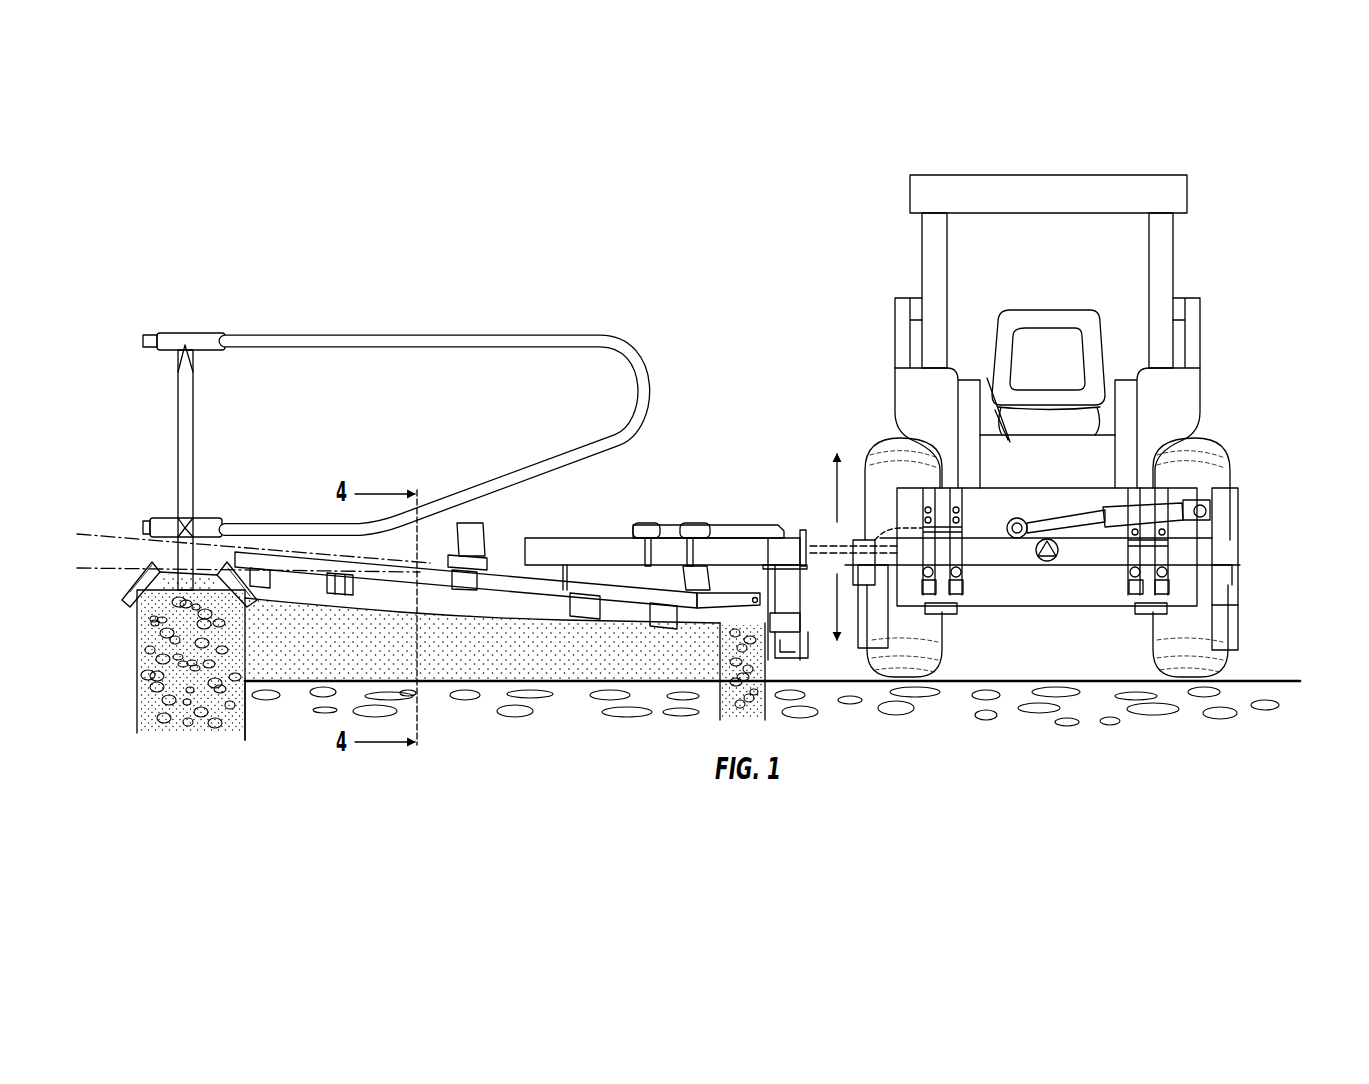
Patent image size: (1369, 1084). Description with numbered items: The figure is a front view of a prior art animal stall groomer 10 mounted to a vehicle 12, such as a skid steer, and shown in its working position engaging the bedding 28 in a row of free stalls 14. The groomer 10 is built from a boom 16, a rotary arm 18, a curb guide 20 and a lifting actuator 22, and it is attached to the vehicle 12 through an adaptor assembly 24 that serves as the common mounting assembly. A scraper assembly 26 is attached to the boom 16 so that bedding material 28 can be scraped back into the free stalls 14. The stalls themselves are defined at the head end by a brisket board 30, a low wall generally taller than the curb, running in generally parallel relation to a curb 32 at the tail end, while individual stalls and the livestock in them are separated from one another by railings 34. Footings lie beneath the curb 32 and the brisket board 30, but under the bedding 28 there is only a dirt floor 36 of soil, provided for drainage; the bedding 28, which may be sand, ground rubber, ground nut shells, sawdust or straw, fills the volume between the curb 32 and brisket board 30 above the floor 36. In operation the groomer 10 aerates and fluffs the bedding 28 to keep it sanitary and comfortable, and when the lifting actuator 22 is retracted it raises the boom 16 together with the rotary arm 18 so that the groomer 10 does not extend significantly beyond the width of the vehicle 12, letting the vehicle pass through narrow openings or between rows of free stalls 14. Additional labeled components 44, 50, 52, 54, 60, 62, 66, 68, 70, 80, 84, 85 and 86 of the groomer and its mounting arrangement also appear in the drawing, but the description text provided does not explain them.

The animal stall groomer 10 is at (1098, 426).
The vehicle 12 is at (1162, 244).
The free stalls 14 is at (292, 312).
The boom 16 is at (636, 536).
The rotary arm 18 is at (588, 538).
The curb guide 20 is at (790, 645).
The lifting actuator 22 is at (1108, 528).
The adaptor assembly 24 is at (972, 618).
The scraper assembly 26 is at (770, 520).
The bedding 28 is at (537, 650).
The brisket board 30 is at (198, 650).
The curb 32 is at (770, 660).
The railings 34 is at (619, 338).
The dirt floor 36 is at (587, 700).
The hydraulic valve 44 is at (1047, 562).
The vertical slide 50 is at (790, 598).
The post 52 is at (806, 550).
The flange 54 is at (783, 572).
The screed beam 60 is at (633, 575).
The roller 62 is at (682, 524).
The form bracket 66 is at (707, 607).
The main beam 68 is at (737, 530).
The bracket 70 is at (630, 535).
The sensor mount 80 is at (472, 528).
The plate 84 is at (533, 538).
The stake 85 is at (338, 585).
The grade line 86 is at (108, 622).